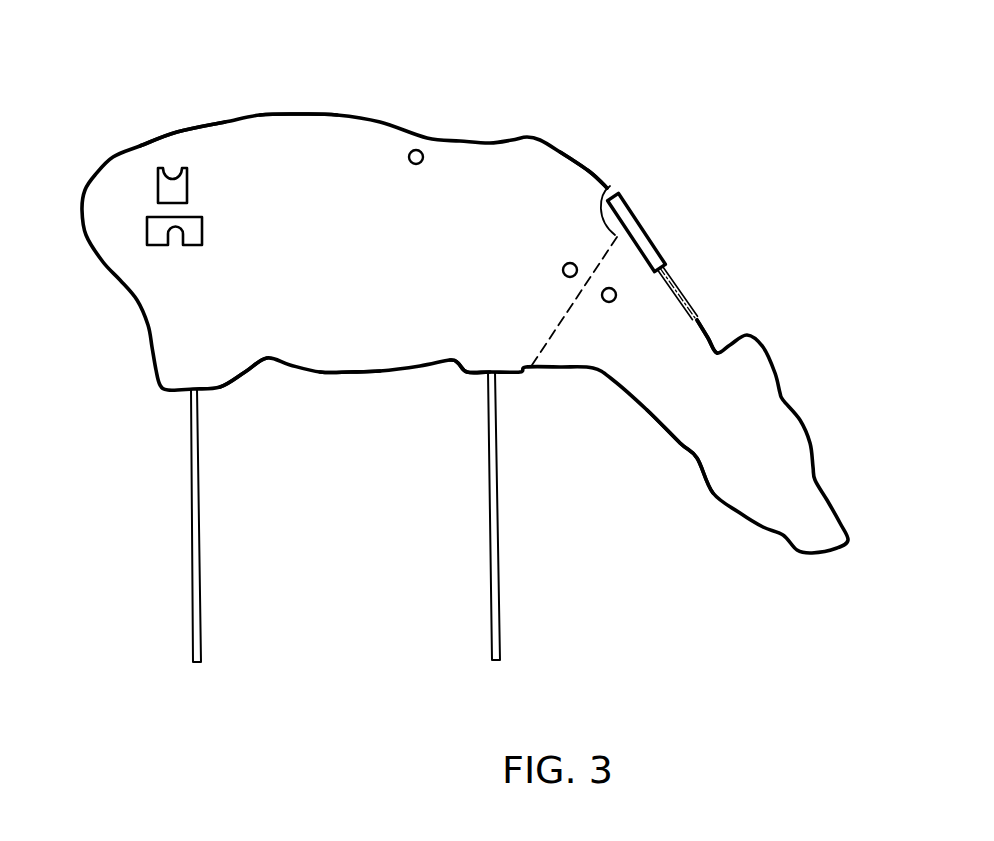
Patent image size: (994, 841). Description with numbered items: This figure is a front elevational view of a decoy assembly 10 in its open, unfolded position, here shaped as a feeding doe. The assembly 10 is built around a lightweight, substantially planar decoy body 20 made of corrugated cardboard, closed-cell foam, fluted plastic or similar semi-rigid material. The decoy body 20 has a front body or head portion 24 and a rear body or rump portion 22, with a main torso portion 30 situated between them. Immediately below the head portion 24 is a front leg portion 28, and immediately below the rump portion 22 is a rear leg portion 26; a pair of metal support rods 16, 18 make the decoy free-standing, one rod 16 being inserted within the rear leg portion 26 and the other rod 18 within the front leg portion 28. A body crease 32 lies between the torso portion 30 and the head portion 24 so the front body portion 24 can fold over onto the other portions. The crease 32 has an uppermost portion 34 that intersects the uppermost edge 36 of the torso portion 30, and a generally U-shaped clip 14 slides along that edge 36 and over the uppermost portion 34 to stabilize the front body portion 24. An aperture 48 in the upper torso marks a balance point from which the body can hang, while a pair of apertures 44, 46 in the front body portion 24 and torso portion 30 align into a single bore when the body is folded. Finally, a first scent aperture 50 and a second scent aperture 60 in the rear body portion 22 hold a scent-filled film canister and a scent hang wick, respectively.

The decoy assembly 10 is at (593, 65).
The U-shaped clip 14 is at (640, 237).
The support rod 16 is at (198, 513).
The support rod 18 is at (498, 525).
The planar decoy body 20 is at (323, 138).
The rear body portion 22 is at (177, 143).
The front body portion 24 is at (713, 450).
The rear leg portion 26 is at (222, 367).
The front leg portion 28 is at (466, 373).
The main torso portion 30 is at (352, 337).
The body crease 32 is at (550, 335).
The uppermost portion of the crease 34 is at (607, 185).
The uppermost edge 36 is at (588, 167).
The aperture 44 is at (611, 302).
The aperture 46 is at (567, 263).
The aperture 48 is at (421, 152).
The first scent aperture 50 is at (158, 190).
The second scent aperture 60 is at (147, 233).